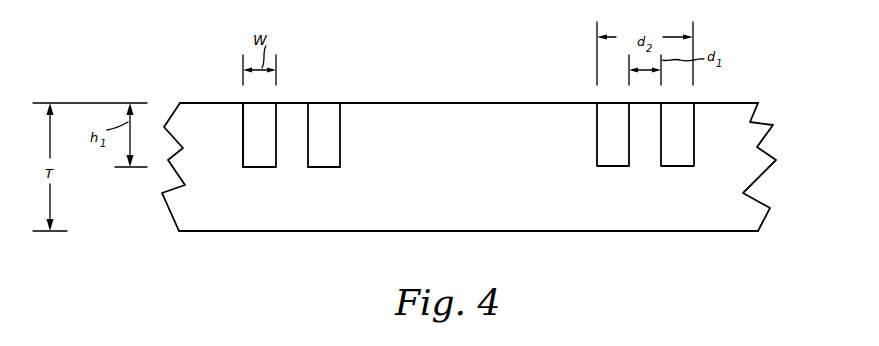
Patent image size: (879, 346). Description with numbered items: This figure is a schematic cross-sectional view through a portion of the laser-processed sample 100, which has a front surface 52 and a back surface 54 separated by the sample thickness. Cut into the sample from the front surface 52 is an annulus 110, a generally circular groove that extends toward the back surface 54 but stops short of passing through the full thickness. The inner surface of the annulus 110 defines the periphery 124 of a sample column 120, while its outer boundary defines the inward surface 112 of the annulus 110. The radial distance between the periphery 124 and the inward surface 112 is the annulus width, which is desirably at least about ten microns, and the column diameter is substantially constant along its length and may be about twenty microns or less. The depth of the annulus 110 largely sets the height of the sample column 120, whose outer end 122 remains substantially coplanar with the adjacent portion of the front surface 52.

The laser-processed sample 100 is at (158, 71).
The front surface 52 is at (577, 101).
The back surface 54 is at (527, 231).
The annulus 110 is at (258, 162).
The inward surface of the annulus 112 is at (245, 124).
The sample column 120 is at (298, 132).
The outer end of the sample column 122 is at (288, 103).
The periphery of the sample column 124 is at (308, 147).